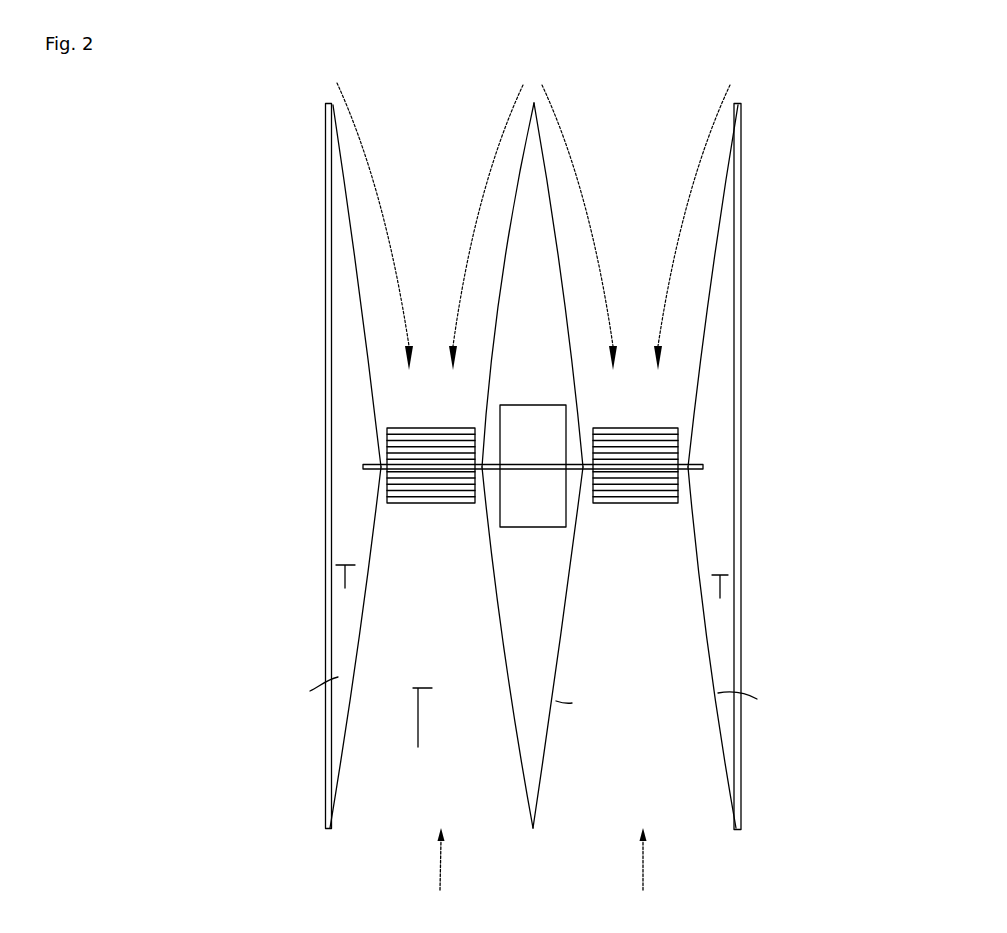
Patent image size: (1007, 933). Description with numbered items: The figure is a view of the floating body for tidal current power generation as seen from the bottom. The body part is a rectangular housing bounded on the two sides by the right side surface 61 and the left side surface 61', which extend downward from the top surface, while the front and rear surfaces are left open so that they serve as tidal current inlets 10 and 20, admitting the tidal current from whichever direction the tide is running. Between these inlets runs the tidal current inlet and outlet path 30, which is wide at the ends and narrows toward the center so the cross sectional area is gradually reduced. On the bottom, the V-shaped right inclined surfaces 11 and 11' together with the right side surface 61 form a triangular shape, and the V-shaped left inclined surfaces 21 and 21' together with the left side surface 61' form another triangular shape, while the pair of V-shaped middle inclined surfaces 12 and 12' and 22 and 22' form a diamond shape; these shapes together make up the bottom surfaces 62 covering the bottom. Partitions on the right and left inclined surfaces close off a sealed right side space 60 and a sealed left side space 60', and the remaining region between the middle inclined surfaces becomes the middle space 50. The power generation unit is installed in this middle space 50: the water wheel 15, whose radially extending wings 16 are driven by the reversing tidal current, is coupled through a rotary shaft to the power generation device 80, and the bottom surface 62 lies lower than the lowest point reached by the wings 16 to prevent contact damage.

The tidal current inlet 10 is at (643, 872).
The V-shaped right inclined surface 11 is at (712, 649).
The V-shaped right inclined surface 11' is at (757, 286).
The V-shaped middle inclined surface 12 is at (558, 654).
The V-shaped middle inclined surface 12' is at (592, 285).
The water wheel 15 is at (704, 445).
The wing 16 is at (638, 453).
The tidal current inlet 20 is at (440, 872).
The V-shaped left inclined surface 21 is at (359, 649).
The V-shaped left inclined surface 21' is at (368, 272).
The V-shaped middle inclined surface 22 is at (502, 647).
The V-shaped middle inclined surface 22' is at (499, 272).
The tidal current inlet and outlet path 30 is at (417, 731).
The middle space 50 is at (520, 582).
The right side space 60 is at (758, 621).
The left side space 60' is at (307, 608).
The right side surface 61 is at (771, 467).
The left side surface 61' is at (286, 466).
The bottom surface 62 is at (310, 691).
The power generation device 80 is at (553, 505).